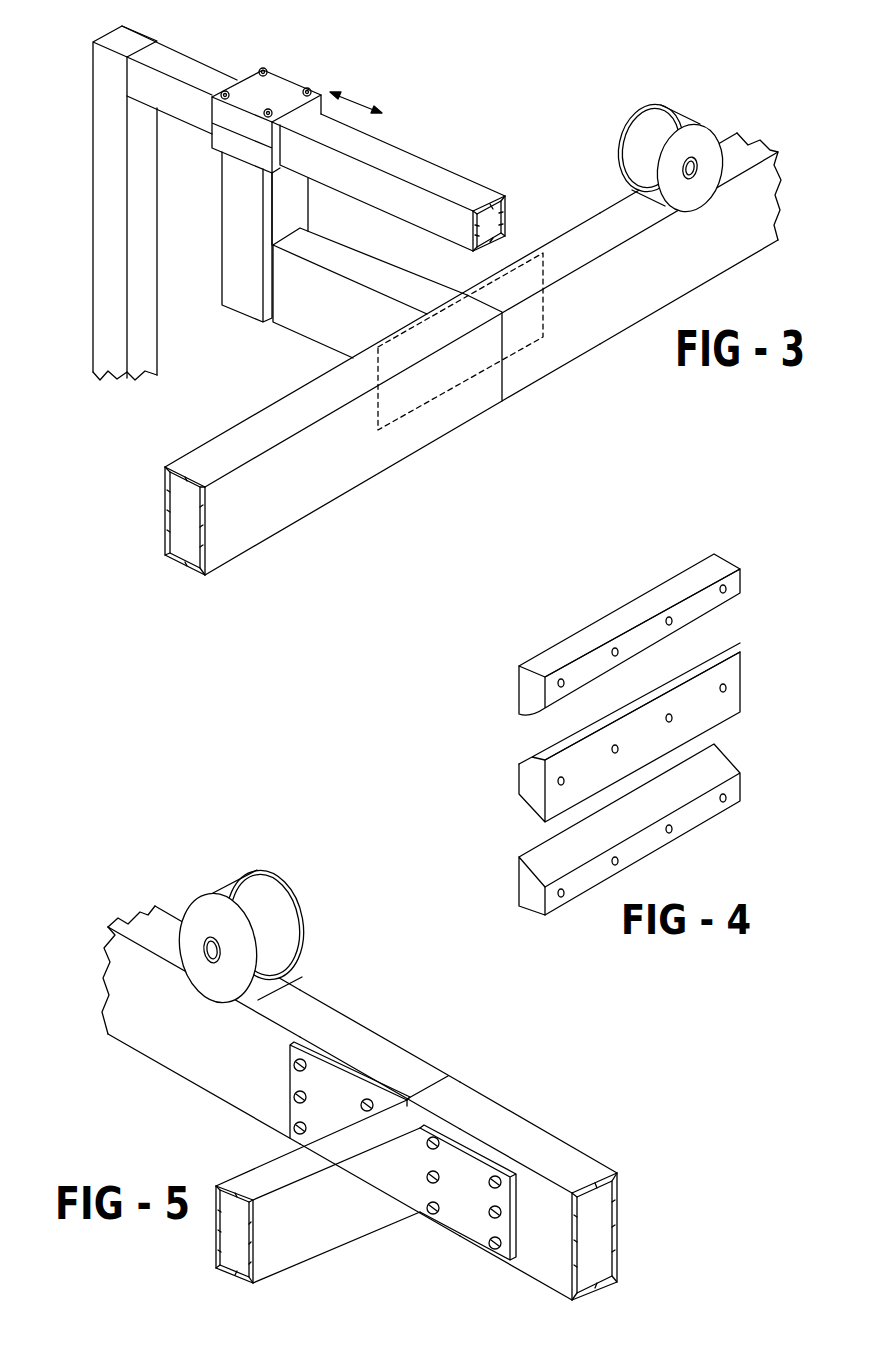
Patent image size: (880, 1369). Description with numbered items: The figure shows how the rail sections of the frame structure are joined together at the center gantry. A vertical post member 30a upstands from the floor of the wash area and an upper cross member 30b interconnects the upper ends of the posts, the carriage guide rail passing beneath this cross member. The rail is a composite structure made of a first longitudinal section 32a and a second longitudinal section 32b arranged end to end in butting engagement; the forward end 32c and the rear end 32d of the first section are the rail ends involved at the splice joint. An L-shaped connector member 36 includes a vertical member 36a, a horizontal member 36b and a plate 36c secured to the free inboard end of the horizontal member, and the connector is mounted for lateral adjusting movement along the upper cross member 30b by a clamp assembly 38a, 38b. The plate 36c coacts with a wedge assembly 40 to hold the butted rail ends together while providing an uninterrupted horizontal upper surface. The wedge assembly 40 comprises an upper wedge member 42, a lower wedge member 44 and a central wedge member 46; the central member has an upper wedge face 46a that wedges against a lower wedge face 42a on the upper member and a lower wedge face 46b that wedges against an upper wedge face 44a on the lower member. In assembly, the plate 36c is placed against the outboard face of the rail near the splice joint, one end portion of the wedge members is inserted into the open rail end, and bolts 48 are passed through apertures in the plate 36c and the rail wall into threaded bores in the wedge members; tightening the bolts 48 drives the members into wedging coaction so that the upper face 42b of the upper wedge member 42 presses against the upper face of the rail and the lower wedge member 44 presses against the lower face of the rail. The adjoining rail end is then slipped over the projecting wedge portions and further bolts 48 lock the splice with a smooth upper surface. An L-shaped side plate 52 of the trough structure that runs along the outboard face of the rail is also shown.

In FIG. 3, the vertical post member 30a is at (103, 215).
In FIG. 3, the upper cross member 30b is at (458, 180).
In FIG. 3, the first longitudinal section 32a is at (210, 458).
In FIG. 3, the second longitudinal section 32b is at (597, 212).
In FIG. 5, the second longitudinal section 32b is at (105, 1000).
In FIG. 3, the forward end 32c is at (555, 362).
In FIG. 5, the forward end 32c is at (205, 1075).
In FIG. 3, the rear end 32d is at (448, 427).
In FIG. 5, the rear end 32d is at (533, 1273).
In FIG. 3, the L-shaped connector member 36 is at (350, 283).
In FIG. 3, the vertical member 36a is at (302, 185).
In FIG. 3, the horizontal member 36b is at (380, 315).
In FIG. 5, the horizontal member 36b is at (316, 1245).
In FIG. 3, the plate 36c is at (485, 355).
In FIG. 5, the plate 36c is at (458, 1220).
In FIG. 3, the clamp assembly 38a is at (282, 88).
In FIG. 3, the clamp assembly 38b is at (245, 153).
In FIG. 4, the wedge assembly 40 is at (609, 696).
In FIG. 4, the upper wedge member 42 is at (585, 639).
In FIG. 4, the lower wedge face 42a is at (532, 723).
In FIG. 4, the upper face 42b is at (535, 652).
In FIG. 4, the lower wedge member 44 is at (590, 829).
In FIG. 4, the upper wedge face 44a is at (532, 872).
In FIG. 4, the central wedge member 46 is at (609, 714).
In FIG. 4, the upper wedge face 46a is at (532, 748).
In FIG. 4, the lower wedge face 46b is at (528, 818).
In FIG. 5, the bolts 48 is at (380, 1070).
In FIG. 3, the L-shaped side plate 52 is at (712, 133).
In FIG. 5, the L-shaped side plate 52 is at (283, 930).